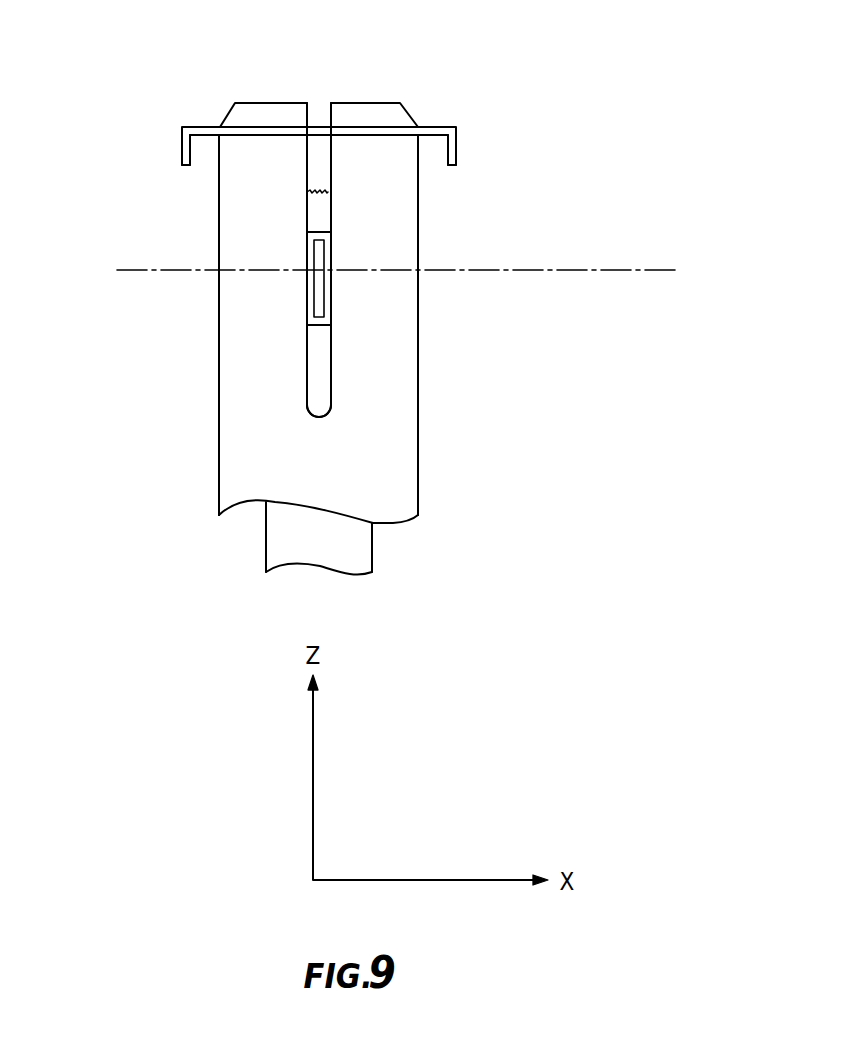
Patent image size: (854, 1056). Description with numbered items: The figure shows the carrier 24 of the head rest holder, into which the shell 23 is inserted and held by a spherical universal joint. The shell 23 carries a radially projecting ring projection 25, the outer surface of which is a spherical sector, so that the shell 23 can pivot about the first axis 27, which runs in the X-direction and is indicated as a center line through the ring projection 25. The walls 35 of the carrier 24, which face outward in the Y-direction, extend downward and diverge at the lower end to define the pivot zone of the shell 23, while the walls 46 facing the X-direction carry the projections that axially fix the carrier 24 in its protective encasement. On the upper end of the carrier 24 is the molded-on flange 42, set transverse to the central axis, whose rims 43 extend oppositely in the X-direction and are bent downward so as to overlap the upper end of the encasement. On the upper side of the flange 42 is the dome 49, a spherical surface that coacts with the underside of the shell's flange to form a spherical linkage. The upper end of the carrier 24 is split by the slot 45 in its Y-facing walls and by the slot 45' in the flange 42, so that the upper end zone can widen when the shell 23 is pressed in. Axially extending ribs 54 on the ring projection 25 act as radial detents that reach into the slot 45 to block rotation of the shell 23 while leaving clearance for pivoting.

The shell 23 is at (320, 212).
The carrier 24 is at (418, 322).
The ring projection 25 is at (312, 247).
The first axis 27 is at (614, 270).
The walls of the carrier 35 is at (383, 455).
The flange 42 is at (435, 128).
The rims 43 is at (455, 147).
The slot 45 is at (406, 373).
The slot 45' is at (337, 220).
The walls 46 is at (418, 228).
The dome 49 is at (238, 118).
The ribs 54 is at (318, 295).